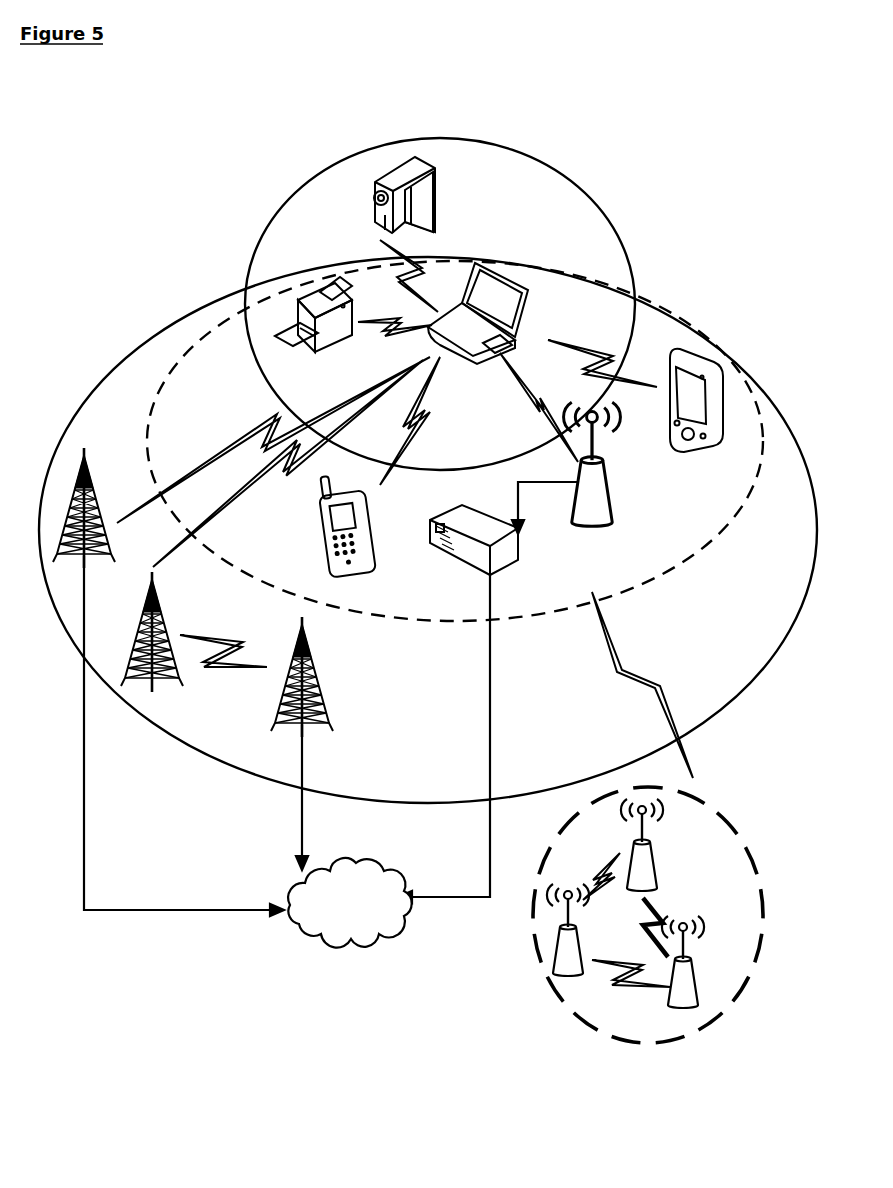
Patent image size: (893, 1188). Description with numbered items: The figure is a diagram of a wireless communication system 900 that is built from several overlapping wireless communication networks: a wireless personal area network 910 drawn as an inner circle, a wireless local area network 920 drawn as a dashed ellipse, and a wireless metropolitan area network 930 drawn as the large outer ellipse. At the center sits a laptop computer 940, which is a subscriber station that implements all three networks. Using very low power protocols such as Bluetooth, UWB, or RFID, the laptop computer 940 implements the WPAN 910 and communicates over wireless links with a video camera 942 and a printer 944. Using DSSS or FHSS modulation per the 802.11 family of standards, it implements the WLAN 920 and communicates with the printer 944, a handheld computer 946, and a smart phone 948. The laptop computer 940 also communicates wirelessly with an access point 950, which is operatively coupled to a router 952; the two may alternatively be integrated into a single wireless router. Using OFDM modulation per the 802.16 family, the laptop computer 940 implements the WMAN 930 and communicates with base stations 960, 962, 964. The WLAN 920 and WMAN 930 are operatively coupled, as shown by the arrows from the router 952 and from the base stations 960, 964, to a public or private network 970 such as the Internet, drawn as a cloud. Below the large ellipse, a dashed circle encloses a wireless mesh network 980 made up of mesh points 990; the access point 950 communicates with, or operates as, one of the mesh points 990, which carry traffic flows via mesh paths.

The wireless communication system 900 is at (665, 170).
The wireless personal area network 910 is at (247, 273).
The wireless local area network 920 is at (192, 348).
The wireless metropolitan area network 930 is at (124, 360).
The laptop computer 940 is at (505, 275).
The video camera 942 is at (436, 203).
The printer 944 is at (345, 345).
The handheld computer 946 is at (703, 450).
The smart phone 948 is at (355, 573).
The access point 950 is at (605, 525).
The router 952 is at (490, 575).
The base station 960 is at (84, 452).
The base station 962 is at (165, 632).
The base station 964 is at (312, 690).
The network 970 is at (400, 870).
The wireless mesh network 980 is at (735, 830).
The mesh points 990 is at (686, 893).